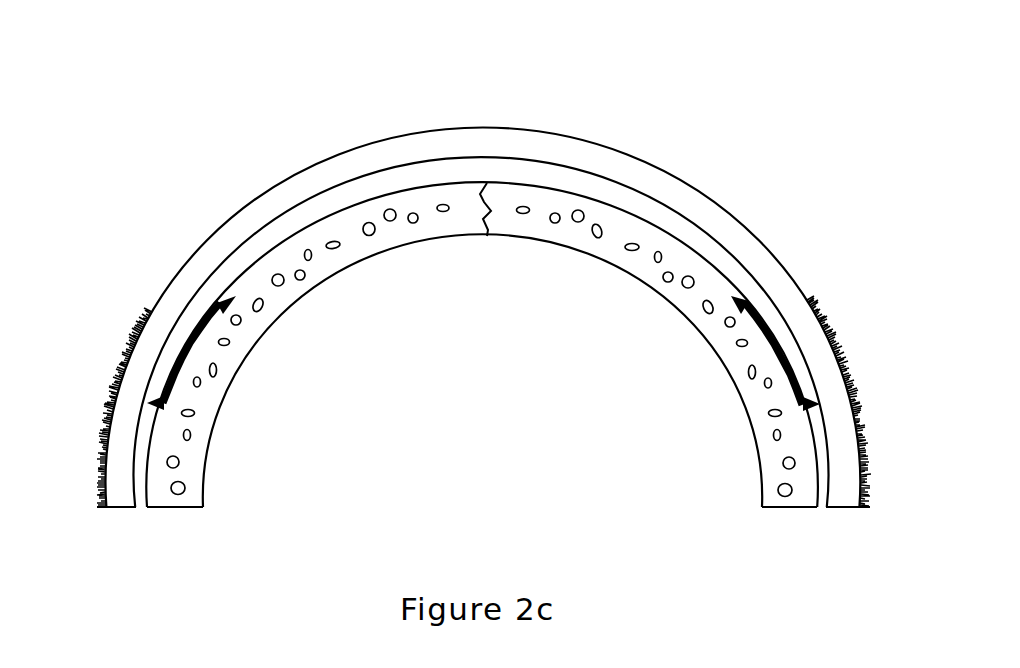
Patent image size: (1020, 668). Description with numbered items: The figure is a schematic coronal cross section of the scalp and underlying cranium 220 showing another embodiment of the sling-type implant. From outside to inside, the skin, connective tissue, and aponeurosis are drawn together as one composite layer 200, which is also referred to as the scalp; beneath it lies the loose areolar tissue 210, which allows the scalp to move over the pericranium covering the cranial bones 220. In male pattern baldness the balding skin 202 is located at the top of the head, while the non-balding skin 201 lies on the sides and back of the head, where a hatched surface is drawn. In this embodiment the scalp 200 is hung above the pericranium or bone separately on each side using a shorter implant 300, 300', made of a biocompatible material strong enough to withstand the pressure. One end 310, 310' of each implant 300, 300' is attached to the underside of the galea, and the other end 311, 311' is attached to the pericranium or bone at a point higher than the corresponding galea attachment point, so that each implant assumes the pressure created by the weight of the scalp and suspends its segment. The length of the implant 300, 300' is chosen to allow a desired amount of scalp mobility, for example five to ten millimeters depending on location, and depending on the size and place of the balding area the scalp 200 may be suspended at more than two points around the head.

The composite layer 200 is at (338, 168).
The non-balding skin 201 is at (835, 340).
The balding skin 202 is at (440, 130).
The loose areolar tissue 210 is at (570, 178).
The cranium 220 is at (352, 248).
The sling-type implant 300 is at (119, 317).
The sling-type implant 300' is at (813, 289).
The end of implant 310 is at (228, 437).
The end of implant 310' is at (730, 439).
The other end of implant 311 is at (160, 231).
The other end of implant 311' is at (755, 209).